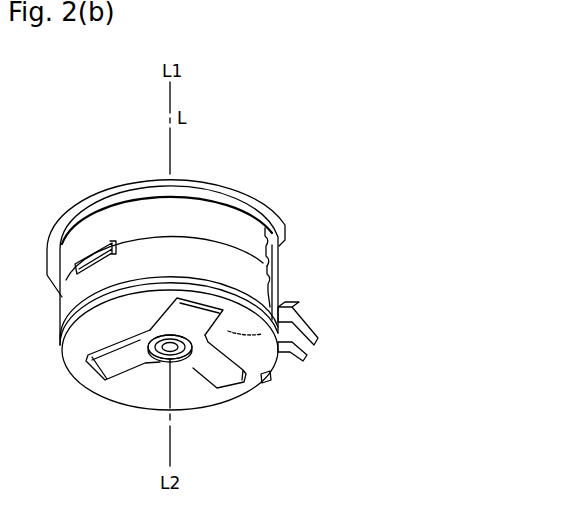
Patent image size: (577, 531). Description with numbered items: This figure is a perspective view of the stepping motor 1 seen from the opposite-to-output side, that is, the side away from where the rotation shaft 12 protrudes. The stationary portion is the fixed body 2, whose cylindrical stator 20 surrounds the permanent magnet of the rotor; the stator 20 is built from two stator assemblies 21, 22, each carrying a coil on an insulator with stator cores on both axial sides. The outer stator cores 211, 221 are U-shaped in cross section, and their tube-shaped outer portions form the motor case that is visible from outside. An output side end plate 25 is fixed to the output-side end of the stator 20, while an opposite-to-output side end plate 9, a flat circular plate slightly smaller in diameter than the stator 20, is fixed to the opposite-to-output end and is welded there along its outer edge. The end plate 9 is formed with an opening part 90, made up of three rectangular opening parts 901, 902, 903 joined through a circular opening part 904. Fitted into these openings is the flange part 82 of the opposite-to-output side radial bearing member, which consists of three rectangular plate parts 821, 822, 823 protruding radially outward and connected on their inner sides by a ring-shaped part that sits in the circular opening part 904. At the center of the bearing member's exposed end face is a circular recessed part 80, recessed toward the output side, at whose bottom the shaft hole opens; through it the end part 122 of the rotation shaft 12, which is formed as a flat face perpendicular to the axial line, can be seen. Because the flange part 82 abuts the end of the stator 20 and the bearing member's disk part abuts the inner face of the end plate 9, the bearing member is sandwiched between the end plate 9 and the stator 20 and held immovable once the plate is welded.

The stepping motor 1 is at (275, 133).
The fixed body 2 is at (214, 239).
The stator 20 is at (209, 239).
The stator assembly 21 is at (268, 251).
The stator assembly 22 is at (268, 285).
The output side end plate 25 is at (271, 212).
The stator core 211 is at (223, 222).
The stator core 221 is at (238, 275).
The opposite-to-output side end plate 9 is at (268, 333).
The opening part 90 is at (128, 350).
The rectangular opening part 901 is at (238, 391).
The rectangular opening part 902 is at (265, 367).
The rectangular opening part 903 is at (95, 378).
The circular opening part 904 is at (157, 370).
The recessed part 80 is at (133, 300).
The flange part 82 is at (133, 300).
The rectangular plate part 821 is at (218, 375).
The rectangular plate part 822 is at (202, 315).
The rectangular plate part 823 is at (84, 357).
The rotation shaft 12 is at (165, 350).
The end part 122 is at (165, 350).